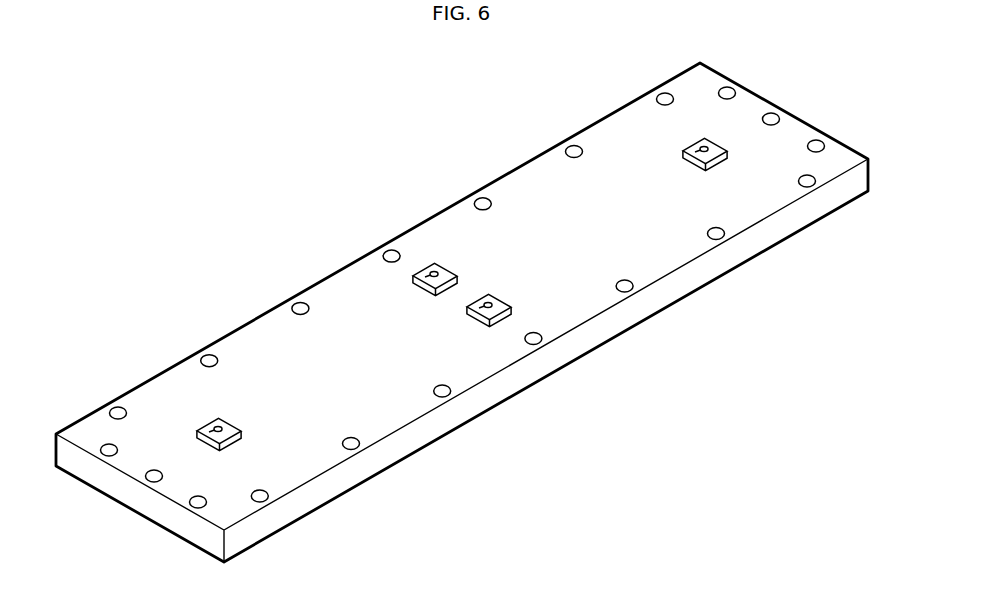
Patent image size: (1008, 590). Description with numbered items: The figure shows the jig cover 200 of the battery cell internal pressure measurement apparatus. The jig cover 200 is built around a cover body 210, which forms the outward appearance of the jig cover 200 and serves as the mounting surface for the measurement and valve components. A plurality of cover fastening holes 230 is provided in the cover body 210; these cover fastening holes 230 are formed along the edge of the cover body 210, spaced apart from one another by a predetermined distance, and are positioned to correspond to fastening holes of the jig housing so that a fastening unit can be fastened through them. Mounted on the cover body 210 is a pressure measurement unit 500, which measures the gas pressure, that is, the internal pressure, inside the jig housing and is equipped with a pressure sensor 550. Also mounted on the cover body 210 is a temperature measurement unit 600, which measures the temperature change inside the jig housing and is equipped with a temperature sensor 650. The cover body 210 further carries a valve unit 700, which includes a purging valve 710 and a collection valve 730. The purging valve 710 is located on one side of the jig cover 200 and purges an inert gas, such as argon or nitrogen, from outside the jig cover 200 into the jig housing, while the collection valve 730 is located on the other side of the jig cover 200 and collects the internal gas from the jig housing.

The jig cover 200 is at (268, 164).
The cover body 210 is at (260, 350).
The cover fastening hole 230 is at (299, 306).
The pressure measurement unit 500 is at (540, 278).
The pressure sensor 550 is at (469, 315).
The temperature measurement unit 600 is at (485, 247).
The temperature sensor 650 is at (416, 281).
The valve unit 700 is at (683, 169).
The purging valve 710 is at (240, 432).
The collection valve 730 is at (727, 150).